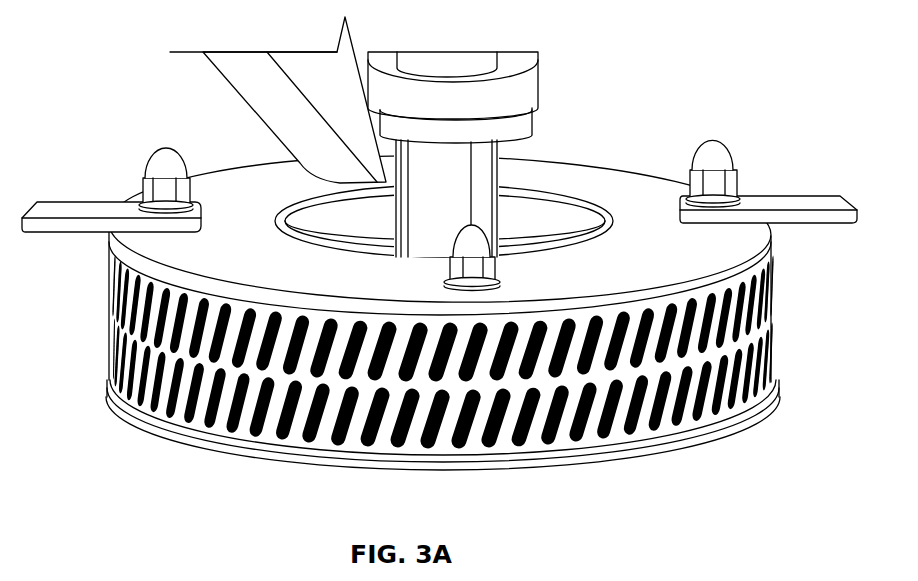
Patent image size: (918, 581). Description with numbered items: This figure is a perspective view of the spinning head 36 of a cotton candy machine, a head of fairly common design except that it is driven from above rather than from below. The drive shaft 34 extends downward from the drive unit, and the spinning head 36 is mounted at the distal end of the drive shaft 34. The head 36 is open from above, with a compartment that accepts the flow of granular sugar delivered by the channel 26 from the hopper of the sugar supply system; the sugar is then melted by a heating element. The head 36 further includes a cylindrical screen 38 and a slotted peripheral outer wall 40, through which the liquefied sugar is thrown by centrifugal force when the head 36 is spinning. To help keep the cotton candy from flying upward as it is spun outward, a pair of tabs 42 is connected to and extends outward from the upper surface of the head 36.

The channel 26 is at (253, 88).
The drive shaft 34 is at (488, 175).
The spinning head 36 is at (601, 170).
The cylindrical screen 38 is at (617, 443).
The slotted peripheral outer wall 40 is at (670, 430).
The tabs 42 is at (832, 200).